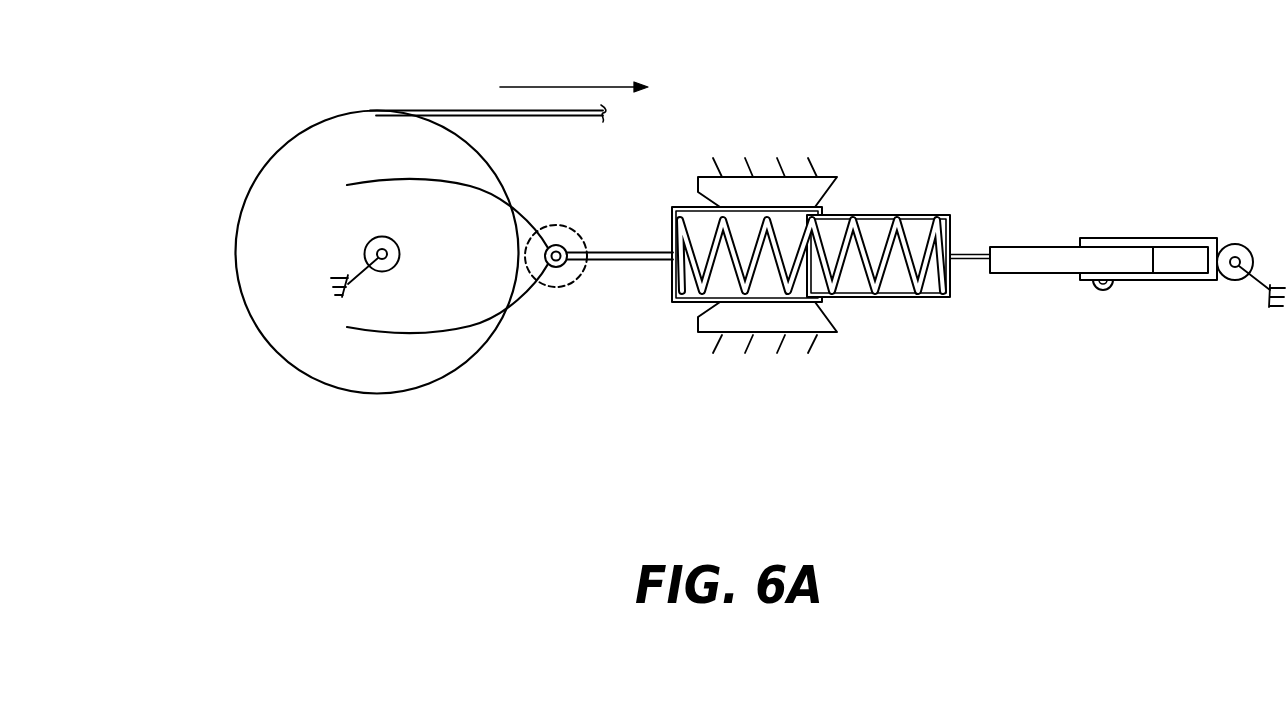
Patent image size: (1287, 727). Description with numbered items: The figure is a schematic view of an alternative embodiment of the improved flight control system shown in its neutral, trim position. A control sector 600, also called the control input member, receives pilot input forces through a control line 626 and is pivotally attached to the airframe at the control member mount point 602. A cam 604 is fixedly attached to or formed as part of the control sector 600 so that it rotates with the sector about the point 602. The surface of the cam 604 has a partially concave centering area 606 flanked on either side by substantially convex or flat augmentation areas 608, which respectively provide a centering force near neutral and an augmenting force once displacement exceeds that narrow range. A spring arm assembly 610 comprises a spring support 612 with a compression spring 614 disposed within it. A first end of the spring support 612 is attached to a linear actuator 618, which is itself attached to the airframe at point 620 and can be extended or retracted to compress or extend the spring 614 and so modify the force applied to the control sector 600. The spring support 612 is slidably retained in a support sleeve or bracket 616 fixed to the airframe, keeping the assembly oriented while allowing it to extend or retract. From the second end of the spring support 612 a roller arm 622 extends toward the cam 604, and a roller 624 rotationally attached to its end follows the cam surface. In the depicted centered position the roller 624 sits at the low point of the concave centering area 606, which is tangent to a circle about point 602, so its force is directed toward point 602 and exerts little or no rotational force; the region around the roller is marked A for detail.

The control sector 600 is at (262, 343).
The control member mount point 602 is at (370, 239).
The cam 604 is at (403, 331).
The centering area 606 is at (553, 238).
The augmentation areas 608 is at (508, 200).
The spring arm assembly 610 is at (833, 264).
The spring support 612 is at (895, 213).
The spring 614 is at (903, 253).
The support sleeve or bracket 616 is at (826, 172).
The linear actuator 618 is at (1115, 237).
The airframe attachment point 620 is at (1235, 282).
The roller arm 622 is at (621, 262).
The roller 624 is at (563, 223).
The control line 626 is at (485, 110).
The detail region A is at (560, 287).